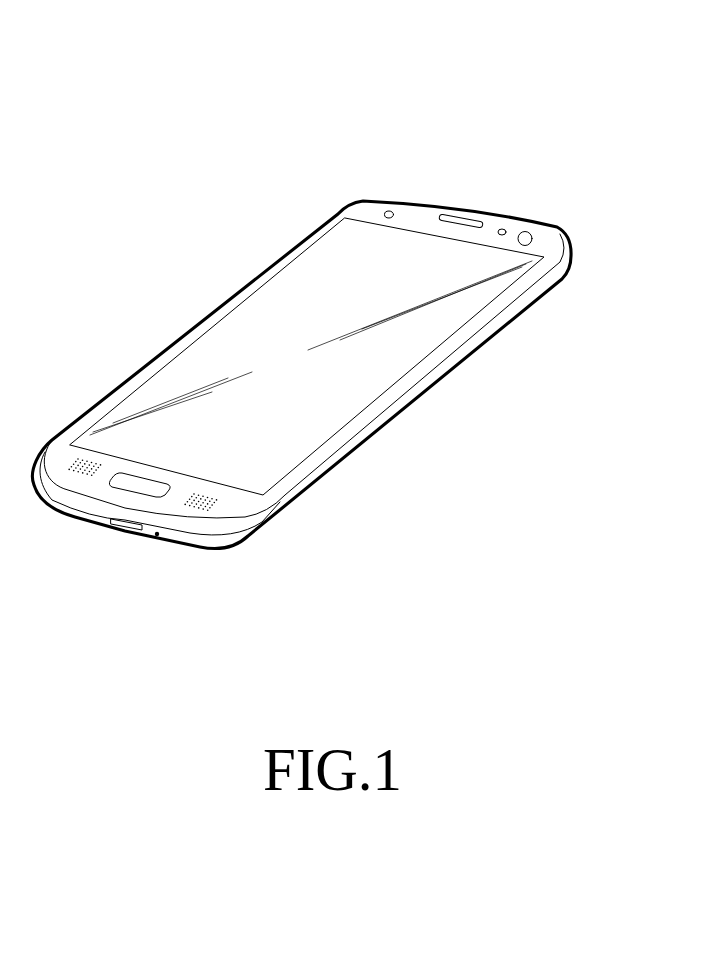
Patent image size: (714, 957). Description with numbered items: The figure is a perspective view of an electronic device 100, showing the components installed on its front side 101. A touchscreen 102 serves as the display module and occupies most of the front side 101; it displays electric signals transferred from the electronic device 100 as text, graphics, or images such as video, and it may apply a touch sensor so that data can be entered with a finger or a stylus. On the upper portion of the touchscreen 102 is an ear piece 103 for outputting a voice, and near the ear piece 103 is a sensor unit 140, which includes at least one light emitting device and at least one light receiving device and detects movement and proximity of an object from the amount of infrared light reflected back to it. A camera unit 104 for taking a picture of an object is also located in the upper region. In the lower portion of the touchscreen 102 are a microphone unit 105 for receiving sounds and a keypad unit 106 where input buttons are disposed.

The electronic device 100 is at (126, 105).
The front side 101 is at (371, 211).
The touchscreen 102 is at (317, 282).
The ear piece 103 is at (456, 214).
The camera unit 104 is at (530, 229).
The sensor unit 140 is at (502, 228).
The microphone unit 105 is at (157, 534).
The keypad unit 106 is at (222, 504).